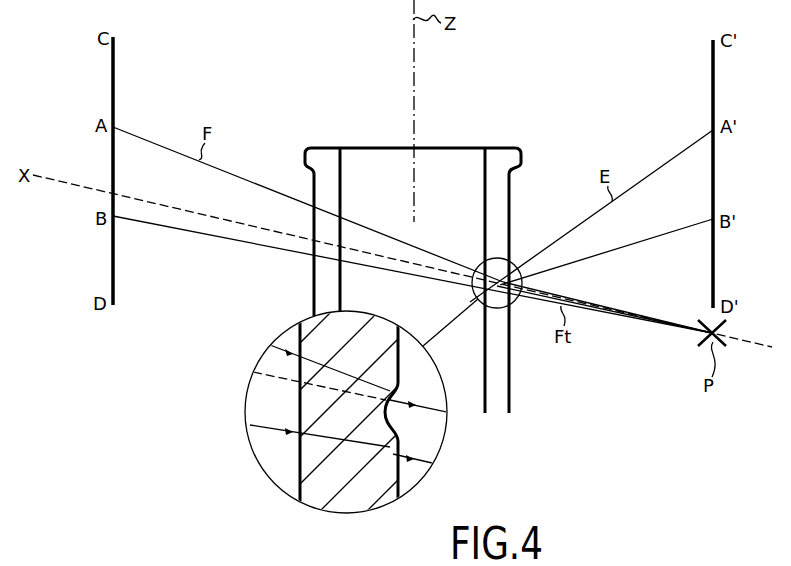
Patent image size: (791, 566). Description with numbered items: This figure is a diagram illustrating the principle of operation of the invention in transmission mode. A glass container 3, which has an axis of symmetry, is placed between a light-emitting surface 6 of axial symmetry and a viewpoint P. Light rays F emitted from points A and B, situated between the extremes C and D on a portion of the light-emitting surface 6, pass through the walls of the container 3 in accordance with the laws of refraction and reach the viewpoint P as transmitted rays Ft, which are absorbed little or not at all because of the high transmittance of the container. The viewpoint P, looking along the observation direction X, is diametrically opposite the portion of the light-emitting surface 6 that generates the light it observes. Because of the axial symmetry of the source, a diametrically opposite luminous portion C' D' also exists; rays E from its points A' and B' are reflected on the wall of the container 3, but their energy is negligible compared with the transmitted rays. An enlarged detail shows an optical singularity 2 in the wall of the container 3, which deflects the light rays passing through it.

The optical singularity 2 is at (376, 416).
The glass container 3 is at (510, 194).
The light-emitting surface 6 is at (109, 259).